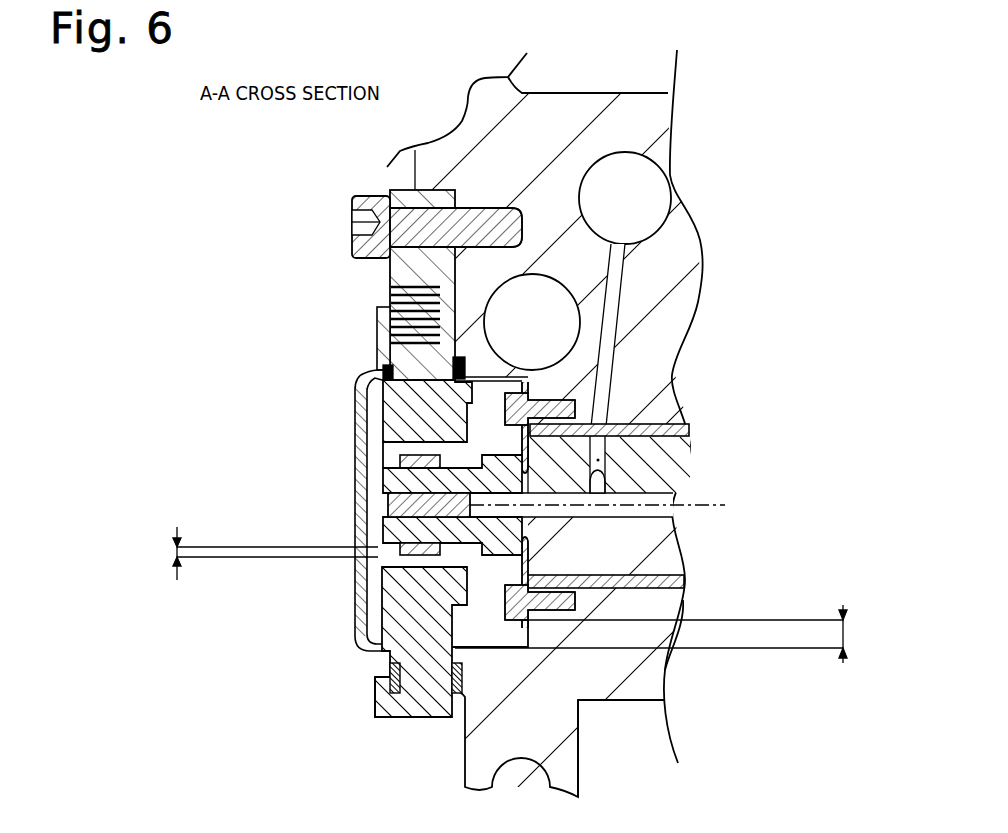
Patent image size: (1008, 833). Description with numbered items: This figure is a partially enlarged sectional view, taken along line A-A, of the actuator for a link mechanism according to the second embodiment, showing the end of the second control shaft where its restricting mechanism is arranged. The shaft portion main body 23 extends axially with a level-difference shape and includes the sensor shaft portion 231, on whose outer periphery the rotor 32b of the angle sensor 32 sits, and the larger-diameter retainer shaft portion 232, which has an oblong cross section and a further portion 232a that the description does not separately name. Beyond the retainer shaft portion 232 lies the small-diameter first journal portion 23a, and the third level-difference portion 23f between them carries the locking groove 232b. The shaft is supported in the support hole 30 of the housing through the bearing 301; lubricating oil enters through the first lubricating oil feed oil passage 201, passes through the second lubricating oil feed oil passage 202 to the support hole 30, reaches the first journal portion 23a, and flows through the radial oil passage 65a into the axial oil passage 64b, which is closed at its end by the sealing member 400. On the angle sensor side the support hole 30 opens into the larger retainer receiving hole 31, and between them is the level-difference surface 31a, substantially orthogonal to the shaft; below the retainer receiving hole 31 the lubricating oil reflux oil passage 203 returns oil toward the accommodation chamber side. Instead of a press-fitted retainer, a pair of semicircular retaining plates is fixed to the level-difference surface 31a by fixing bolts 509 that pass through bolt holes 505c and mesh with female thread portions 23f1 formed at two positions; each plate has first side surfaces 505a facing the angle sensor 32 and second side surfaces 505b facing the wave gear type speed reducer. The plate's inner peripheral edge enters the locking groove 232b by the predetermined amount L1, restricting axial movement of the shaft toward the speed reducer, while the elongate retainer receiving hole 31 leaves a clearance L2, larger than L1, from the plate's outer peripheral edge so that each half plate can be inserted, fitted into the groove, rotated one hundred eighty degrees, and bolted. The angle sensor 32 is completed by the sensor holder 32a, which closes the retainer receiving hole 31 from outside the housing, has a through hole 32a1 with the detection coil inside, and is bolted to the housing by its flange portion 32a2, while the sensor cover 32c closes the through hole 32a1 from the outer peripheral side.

The shaft portion main body 23 is at (657, 545).
The first journal portion 23a is at (638, 605).
The third level-difference portion 23f is at (452, 650).
The female thread portions 23f1 is at (580, 617).
The first lubricating oil feed oil passage 201 is at (616, 170).
The second lubricating oil feed oil passage 202 is at (660, 295).
The lubricating oil reflux oil passage 203 is at (660, 588).
The support hole 30 is at (693, 452).
The bearing 301 is at (585, 590).
The retainer receiving hole 31 is at (417, 708).
The level-difference surface 31a is at (385, 284).
The angle sensor 32 is at (376, 546).
The sensor holder 32a is at (374, 295).
The through hole 32a1 is at (405, 455).
The flange portion 32a2 is at (383, 620).
The rotor 32b is at (453, 603).
The sensor cover 32c is at (378, 677).
The sensor shaft portion 231 is at (525, 440).
The retainer shaft portion 232 is at (485, 460).
The lower spacer band 232a is at (440, 553).
The locking groove 232b is at (438, 462).
The sealing member 400 is at (388, 505).
The first side surfaces 505a is at (385, 372).
The second side surfaces 505b is at (530, 393).
The bolt holes 505c is at (460, 693).
The fixing bolts 509 is at (395, 693).
The axial oil passage 64b is at (672, 511).
The radial oil passage 65a is at (667, 458).
The predetermined amount L1 is at (259, 553).
The clearance L2 is at (666, 634).